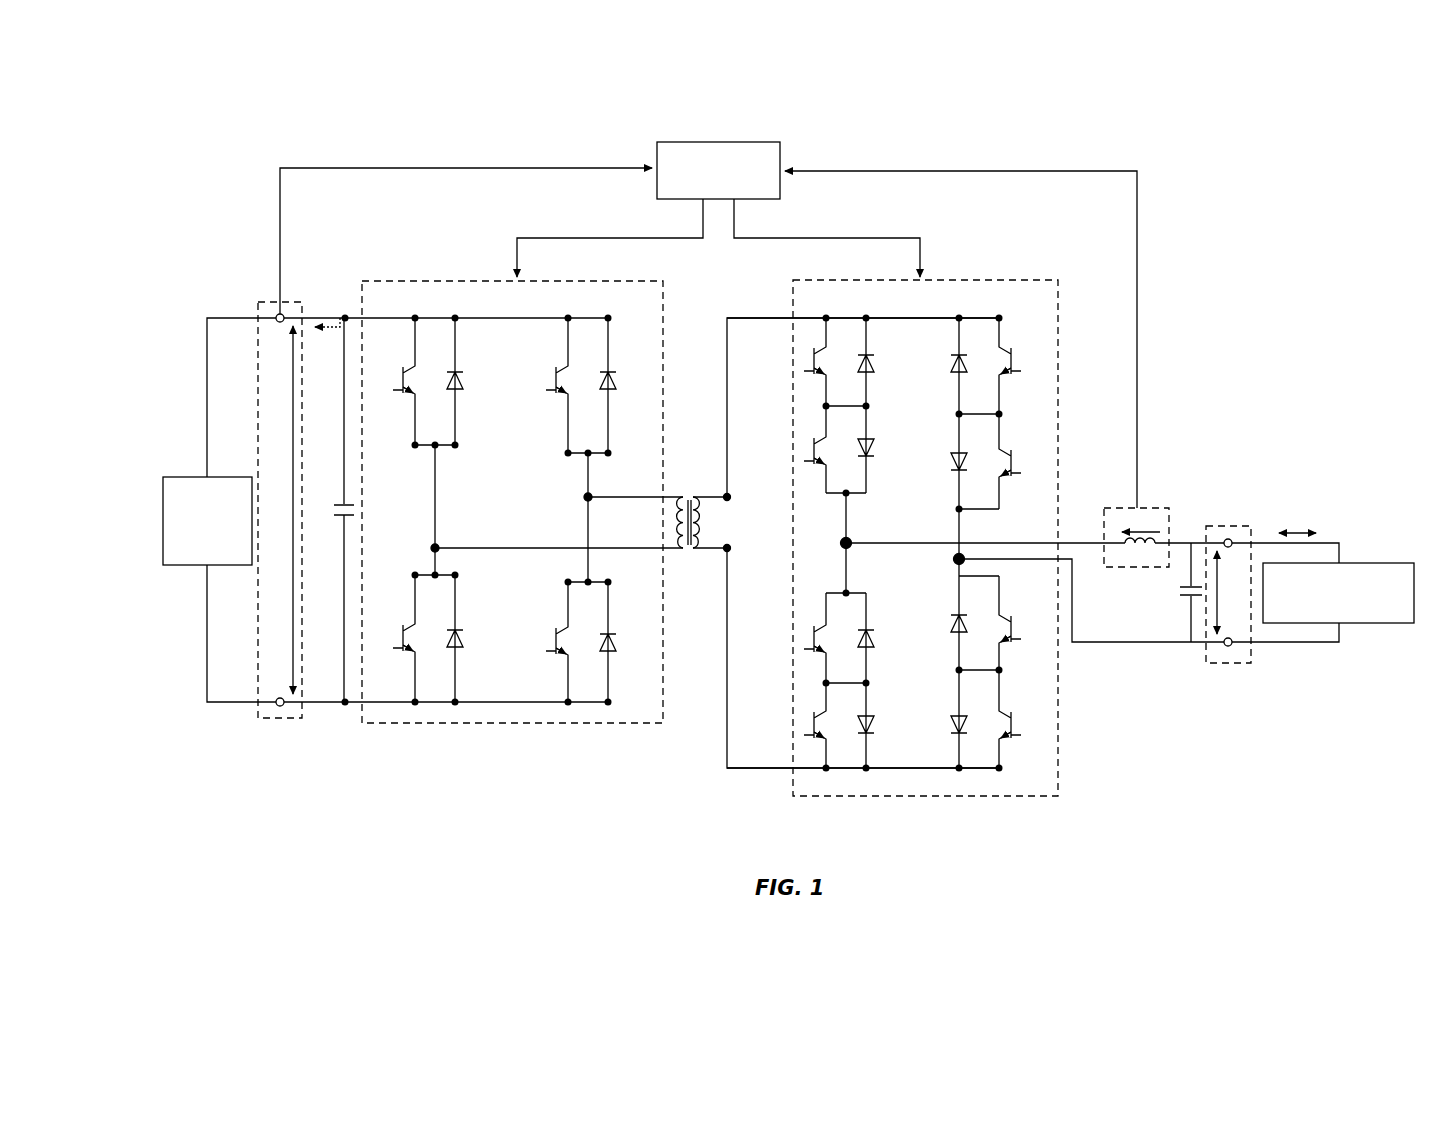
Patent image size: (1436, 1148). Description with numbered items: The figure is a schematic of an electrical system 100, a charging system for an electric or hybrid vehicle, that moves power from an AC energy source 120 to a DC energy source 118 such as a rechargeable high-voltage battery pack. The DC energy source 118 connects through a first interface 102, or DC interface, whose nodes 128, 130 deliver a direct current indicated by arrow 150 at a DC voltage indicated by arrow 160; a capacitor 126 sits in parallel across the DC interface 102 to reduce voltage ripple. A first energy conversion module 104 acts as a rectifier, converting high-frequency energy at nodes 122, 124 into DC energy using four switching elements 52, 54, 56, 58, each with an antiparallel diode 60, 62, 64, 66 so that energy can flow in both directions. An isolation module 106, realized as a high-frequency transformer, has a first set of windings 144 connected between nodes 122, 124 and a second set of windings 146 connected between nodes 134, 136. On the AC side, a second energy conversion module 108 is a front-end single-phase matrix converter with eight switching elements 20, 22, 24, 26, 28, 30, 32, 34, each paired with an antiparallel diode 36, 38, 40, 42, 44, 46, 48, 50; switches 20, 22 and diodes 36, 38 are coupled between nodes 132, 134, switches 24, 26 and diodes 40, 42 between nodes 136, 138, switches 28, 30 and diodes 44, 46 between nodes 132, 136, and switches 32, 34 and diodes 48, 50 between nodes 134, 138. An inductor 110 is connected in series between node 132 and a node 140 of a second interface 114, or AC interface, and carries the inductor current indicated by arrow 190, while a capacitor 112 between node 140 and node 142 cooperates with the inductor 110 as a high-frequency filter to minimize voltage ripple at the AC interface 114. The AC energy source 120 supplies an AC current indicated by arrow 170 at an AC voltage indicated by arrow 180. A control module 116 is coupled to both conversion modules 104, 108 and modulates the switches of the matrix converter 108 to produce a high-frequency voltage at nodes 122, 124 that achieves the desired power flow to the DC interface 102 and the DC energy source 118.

The electrical system 100 is at (1115, 128).
The first interface 102 is at (278, 720).
The first energy conversion module 104 is at (540, 728).
The isolation module 106 is at (687, 565).
The second energy conversion module 108 is at (990, 797).
The inductive element 110 is at (1140, 556).
The capacitive element 112 is at (1178, 592).
The second interface 114 is at (1225, 668).
The control module 116 is at (738, 142).
The DC energy source 118 is at (213, 477).
The AC energy source 120 is at (1375, 563).
The node 122 is at (440, 548).
The node 124 is at (586, 497).
The capacitor 126 is at (358, 512).
The node 128 is at (283, 314).
The node 130 is at (284, 706).
The node 132 is at (852, 541).
The node 134 is at (826, 317).
The node 136 is at (825, 770).
The node 138 is at (953, 562).
The node 140 is at (1230, 539).
The node 142 is at (1232, 645).
The first set of windings 144 is at (676, 540).
The second set of windings 146 is at (702, 540).
The arrow 150 is at (333, 316).
The arrow 160 is at (296, 585).
The arrow 170 is at (1298, 530).
The arrow 180 is at (1212, 620).
The arrow 190 is at (1143, 530).
The switching element 20 is at (811, 362).
The switching element 22 is at (811, 449).
The switching element 24 is at (1020, 623).
The switching element 26 is at (1020, 719).
The switching element 28 is at (811, 725).
The switching element 30 is at (811, 638).
The switching element 32 is at (1020, 461).
The switching element 34 is at (1020, 366).
The diode 36 is at (882, 362).
The diode 38 is at (882, 449).
The diode 40 is at (943, 623).
The diode 42 is at (944, 719).
The diode 44 is at (880, 725).
The diode 46 is at (882, 638).
The diode 48 is at (943, 461).
The diode 50 is at (942, 366).
The switching element 52 is at (392, 381).
The switching element 54 is at (392, 638).
The switching element 56 is at (545, 385).
The switching element 58 is at (545, 642).
The diode 60 is at (472, 381).
The diode 62 is at (472, 638).
The diode 64 is at (625, 385).
The diode 66 is at (625, 642).